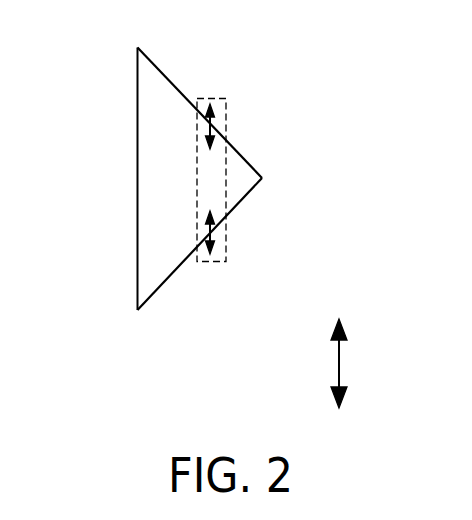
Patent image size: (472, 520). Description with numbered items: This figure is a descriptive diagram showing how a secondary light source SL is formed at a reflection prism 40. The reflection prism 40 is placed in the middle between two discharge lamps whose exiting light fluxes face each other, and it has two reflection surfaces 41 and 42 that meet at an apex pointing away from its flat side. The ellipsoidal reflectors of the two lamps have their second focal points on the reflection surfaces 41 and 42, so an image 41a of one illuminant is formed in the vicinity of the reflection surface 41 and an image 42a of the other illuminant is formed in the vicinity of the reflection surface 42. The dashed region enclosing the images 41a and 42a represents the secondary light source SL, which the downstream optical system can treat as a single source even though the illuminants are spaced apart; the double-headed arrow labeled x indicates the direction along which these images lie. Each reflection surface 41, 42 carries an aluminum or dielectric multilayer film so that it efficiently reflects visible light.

The reflection prism 40 is at (137, 177).
The reflection surface 41 is at (183, 93).
The reflection surface 42 is at (170, 277).
The image of illuminant 41a is at (212, 122).
The image of illuminant 42a is at (206, 237).
The secondary light source SL is at (228, 99).
The x-axis direction x is at (349, 363).